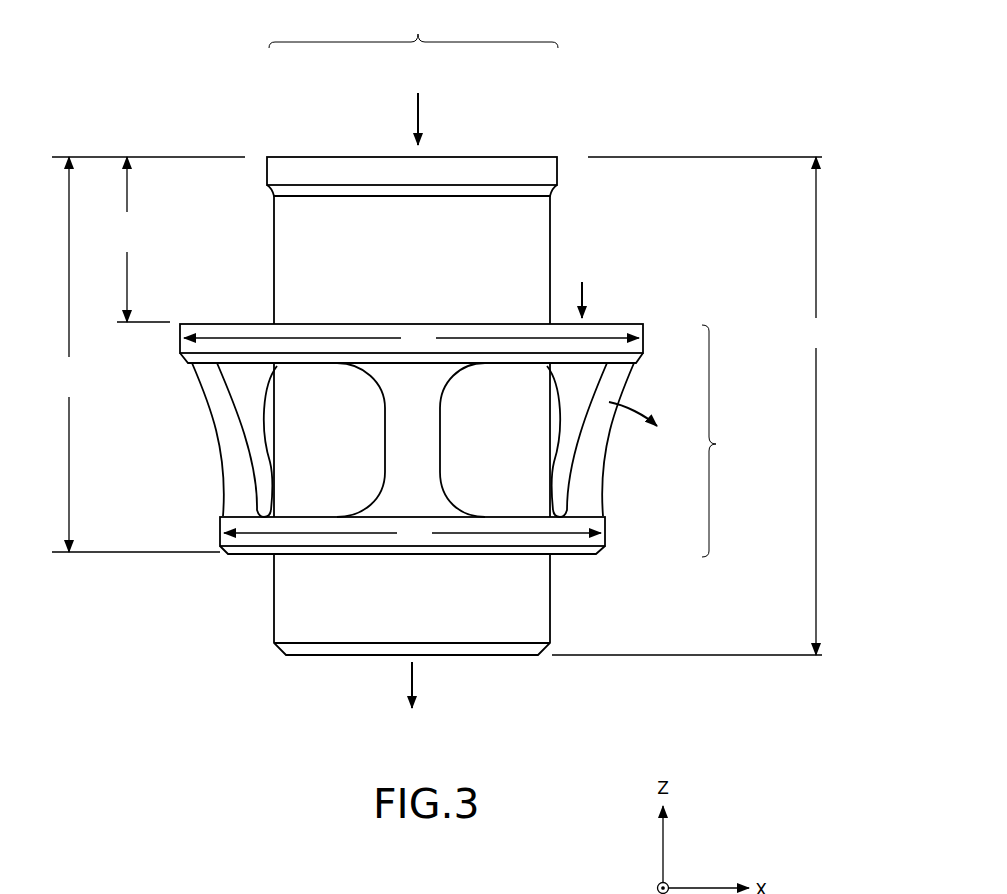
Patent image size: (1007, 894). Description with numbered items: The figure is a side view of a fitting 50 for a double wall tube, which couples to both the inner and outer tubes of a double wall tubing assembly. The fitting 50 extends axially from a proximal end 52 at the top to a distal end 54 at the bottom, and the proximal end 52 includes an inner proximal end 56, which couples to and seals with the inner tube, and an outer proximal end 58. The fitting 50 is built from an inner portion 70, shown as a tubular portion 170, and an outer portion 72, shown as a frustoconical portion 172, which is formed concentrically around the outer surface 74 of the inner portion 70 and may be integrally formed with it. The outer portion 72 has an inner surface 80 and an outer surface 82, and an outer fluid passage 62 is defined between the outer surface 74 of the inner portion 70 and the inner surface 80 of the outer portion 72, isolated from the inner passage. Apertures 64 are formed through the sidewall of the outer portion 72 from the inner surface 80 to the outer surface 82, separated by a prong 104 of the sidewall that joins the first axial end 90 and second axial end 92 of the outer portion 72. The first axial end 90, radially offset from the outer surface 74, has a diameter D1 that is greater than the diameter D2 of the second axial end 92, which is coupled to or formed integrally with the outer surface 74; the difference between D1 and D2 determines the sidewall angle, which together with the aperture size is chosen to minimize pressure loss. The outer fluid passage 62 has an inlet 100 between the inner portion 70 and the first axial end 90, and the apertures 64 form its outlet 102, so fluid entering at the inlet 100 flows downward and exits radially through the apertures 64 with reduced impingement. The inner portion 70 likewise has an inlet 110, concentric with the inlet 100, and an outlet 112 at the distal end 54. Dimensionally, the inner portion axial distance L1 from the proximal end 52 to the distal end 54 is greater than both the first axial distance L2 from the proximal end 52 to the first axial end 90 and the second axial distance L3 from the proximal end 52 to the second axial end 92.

The fitting 50 is at (206, 124).
The proximal end 52 is at (590, 133).
The distal end 54 is at (554, 662).
The inner proximal end 56 is at (532, 156).
The outer proximal end 58 is at (633, 323).
The outer fluid passage 62 is at (578, 378).
The apertures 64 is at (440, 445).
The inner portion 70 is at (413, 25).
The tubular portion 170 is at (413, 41).
The outer portion 72 is at (752, 441).
The frustoconical portion 172 is at (709, 441).
The outer surface 74 is at (403, 274).
The inner surface 80 is at (242, 370).
The outer surface 82 is at (403, 495).
The first axial end 90 is at (255, 319).
The second axial end 92 is at (223, 559).
The inlet 100 is at (582, 285).
The outlet 102 is at (649, 432).
The prong 104 is at (400, 451).
The inlet 110 is at (420, 105).
The outlet 112 is at (413, 703).
The diameter of the first axial end D1 is at (411, 339).
The diameter of the second axial end D2 is at (412, 534).
The inner portion axial distance L1 is at (810, 406).
The first axial distance L2 is at (128, 239).
The second axial distance L3 is at (73, 354).